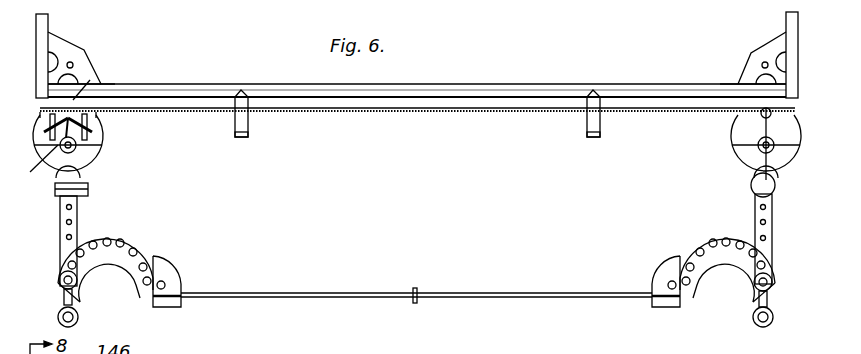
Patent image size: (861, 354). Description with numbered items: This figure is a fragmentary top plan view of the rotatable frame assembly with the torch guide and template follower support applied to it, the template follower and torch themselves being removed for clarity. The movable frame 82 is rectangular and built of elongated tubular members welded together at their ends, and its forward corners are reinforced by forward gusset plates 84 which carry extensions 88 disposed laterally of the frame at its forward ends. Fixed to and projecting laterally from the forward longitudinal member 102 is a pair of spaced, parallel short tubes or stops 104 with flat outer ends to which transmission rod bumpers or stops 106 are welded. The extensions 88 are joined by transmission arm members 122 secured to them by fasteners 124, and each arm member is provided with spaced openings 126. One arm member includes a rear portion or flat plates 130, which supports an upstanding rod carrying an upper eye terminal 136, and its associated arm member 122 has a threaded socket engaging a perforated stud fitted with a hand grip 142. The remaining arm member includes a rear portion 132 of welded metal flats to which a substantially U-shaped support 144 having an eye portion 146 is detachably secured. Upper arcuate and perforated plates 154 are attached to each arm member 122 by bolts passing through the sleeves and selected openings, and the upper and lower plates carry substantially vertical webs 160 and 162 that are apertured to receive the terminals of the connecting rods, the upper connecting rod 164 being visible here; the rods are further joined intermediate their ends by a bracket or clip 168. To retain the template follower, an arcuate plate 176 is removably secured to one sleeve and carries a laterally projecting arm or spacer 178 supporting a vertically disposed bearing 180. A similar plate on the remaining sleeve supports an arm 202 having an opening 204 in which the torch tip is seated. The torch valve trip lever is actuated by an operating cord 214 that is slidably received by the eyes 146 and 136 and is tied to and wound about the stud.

The movable frame 82 is at (44, 28).
The forward gusset plates 84 is at (82, 62).
The extensions 88 is at (82, 158).
The forward longitudinal member 102 is at (498, 93).
The short tubes or stops 104 is at (249, 128).
The transmission rod bumpers or stops 106 is at (242, 140).
The transmission arm members 122 is at (77, 214).
The fasteners 124 is at (754, 147).
The spaced openings 126 is at (66, 238).
The rear portion or flat plates 130 is at (740, 132).
The rear portion 132 is at (92, 146).
The upper eye terminal 136 is at (760, 108).
The hand grip 142 is at (772, 198).
The U-shaped support 144 is at (88, 128).
The eye portion 146 is at (92, 78).
The upper arcuate perforated plate 154 is at (130, 238).
The vertical web 160 is at (153, 270).
The vertical web 162 is at (180, 292).
The upper connecting rod 164 is at (475, 291).
The bracket or clip 168 is at (413, 290).
The arcuate plate 176 is at (772, 284).
The arm or spacer 178 is at (765, 296).
The bearing 180 is at (752, 327).
The arm 202 is at (74, 299).
The opening 204 is at (78, 318).
The operating cord 214 is at (428, 112).